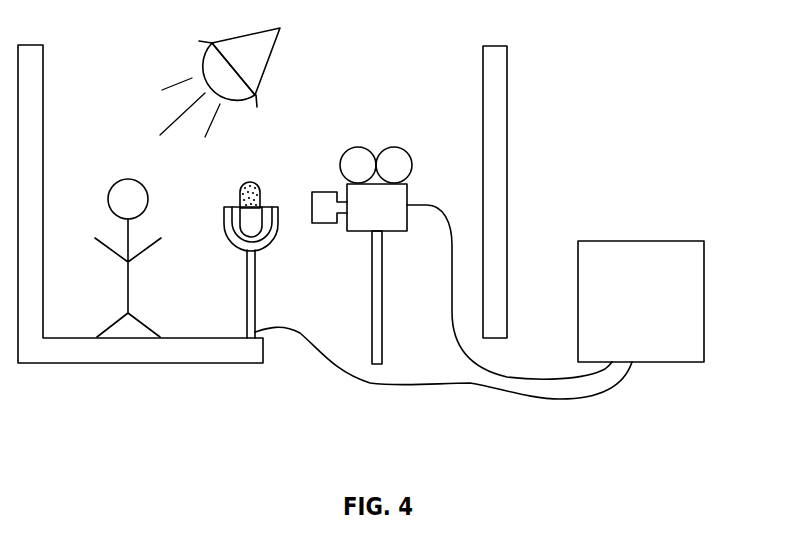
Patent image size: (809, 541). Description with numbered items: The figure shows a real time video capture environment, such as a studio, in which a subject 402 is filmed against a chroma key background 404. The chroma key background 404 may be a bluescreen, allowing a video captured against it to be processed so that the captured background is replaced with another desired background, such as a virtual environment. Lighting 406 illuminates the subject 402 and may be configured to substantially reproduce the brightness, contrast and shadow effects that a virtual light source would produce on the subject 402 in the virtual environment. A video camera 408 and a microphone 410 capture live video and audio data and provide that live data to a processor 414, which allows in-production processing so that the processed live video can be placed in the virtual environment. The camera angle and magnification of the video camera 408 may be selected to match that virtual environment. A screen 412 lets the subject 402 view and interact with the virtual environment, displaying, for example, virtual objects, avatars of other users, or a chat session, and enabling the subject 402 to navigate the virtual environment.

The subject 402 is at (147, 197).
The chroma key background 404 is at (43, 83).
The lighting 406 is at (267, 67).
The video camera 408 is at (407, 191).
The microphone 410 is at (256, 261).
The screen 412 is at (508, 97).
The processor 414 is at (704, 277).